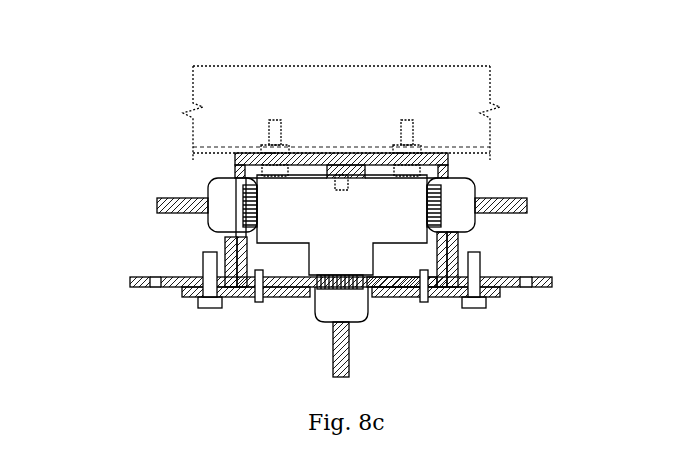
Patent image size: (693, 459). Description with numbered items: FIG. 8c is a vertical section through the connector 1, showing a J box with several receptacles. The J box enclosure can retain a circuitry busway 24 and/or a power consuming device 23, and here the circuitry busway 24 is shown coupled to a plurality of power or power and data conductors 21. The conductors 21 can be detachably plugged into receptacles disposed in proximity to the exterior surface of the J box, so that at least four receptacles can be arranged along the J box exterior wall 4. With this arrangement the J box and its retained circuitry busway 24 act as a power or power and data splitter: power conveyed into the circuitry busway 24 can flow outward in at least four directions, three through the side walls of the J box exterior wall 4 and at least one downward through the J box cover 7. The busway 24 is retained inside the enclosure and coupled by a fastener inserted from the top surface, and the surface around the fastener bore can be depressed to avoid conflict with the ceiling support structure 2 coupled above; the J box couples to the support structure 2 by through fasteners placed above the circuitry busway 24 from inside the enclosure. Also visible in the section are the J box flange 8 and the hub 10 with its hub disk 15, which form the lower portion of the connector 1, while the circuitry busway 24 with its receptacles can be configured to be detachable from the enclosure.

The connector 1 is at (123, 123).
The ceiling support structure 2 is at (343, 78).
The J box exterior wall 4 is at (237, 160).
The J box cover 7 is at (392, 297).
The J box flange 8 is at (193, 300).
The hub 10 is at (396, 305).
The hub disk 15 is at (543, 287).
The conductor 21 is at (170, 213).
The power consuming device 23 is at (341, 272).
The circuitry busway hub 24 is at (281, 242).